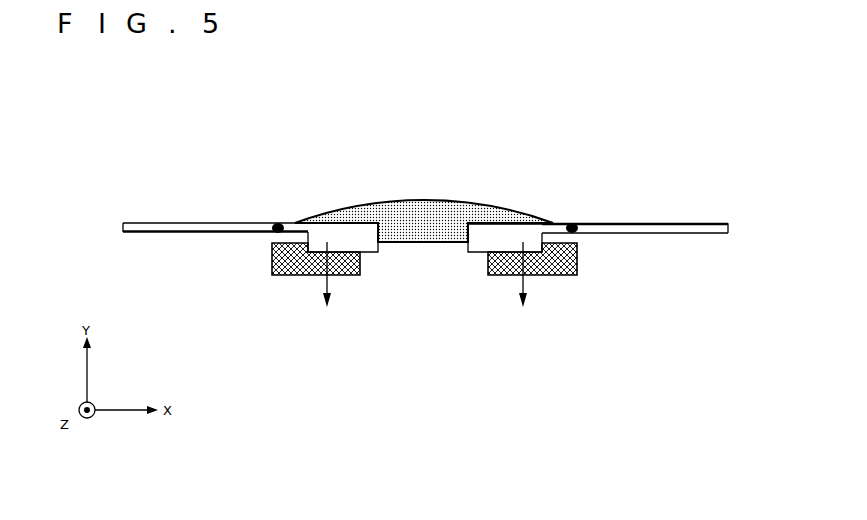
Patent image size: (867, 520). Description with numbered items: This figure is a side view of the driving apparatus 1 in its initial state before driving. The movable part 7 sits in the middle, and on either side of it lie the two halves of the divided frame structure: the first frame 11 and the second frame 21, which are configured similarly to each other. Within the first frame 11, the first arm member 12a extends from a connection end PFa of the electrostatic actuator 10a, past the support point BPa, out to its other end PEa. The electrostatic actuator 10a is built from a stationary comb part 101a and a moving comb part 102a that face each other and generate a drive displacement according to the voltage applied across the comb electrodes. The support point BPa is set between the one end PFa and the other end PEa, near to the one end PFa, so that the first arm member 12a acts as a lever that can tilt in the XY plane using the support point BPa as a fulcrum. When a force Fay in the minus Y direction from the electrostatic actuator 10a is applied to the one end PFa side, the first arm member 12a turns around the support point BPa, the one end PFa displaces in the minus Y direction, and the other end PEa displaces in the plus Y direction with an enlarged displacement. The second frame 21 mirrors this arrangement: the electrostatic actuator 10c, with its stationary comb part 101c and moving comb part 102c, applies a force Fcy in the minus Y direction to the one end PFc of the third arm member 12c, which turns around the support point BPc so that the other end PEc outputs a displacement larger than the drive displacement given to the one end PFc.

The driving apparatus 1 is at (90, 141).
The movable part 7 is at (428, 211).
The first frame 11 is at (666, 223).
The second frame 21 is at (183, 222).
The first arm member 12a is at (640, 234).
The third arm member 12c is at (207, 233).
The electrostatic actuator 10a is at (507, 288).
The electrostatic actuator 10c is at (353, 287).
The stationary comb part 101a is at (566, 276).
The stationary comb part 101c is at (281, 276).
The moving comb part 102a is at (477, 253).
The moving comb part 102c is at (373, 253).
The other end of first arm member PEa is at (728, 228).
The other end of third arm member PEc is at (123, 228).
The support point BPa is at (572, 223).
The support point BPc is at (278, 223).
The connection end PFa is at (467, 225).
The one end of third arm member PFc is at (380, 224).
The force Fay is at (523, 309).
The force Fcy is at (327, 309).